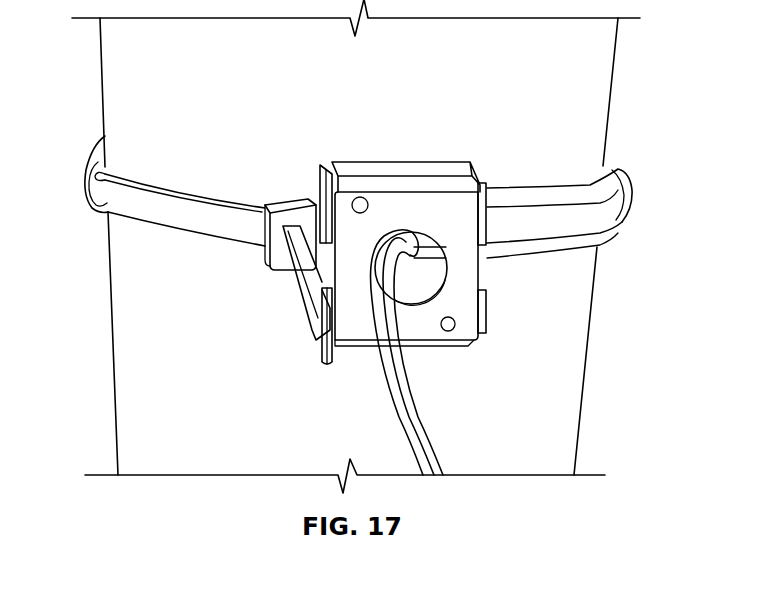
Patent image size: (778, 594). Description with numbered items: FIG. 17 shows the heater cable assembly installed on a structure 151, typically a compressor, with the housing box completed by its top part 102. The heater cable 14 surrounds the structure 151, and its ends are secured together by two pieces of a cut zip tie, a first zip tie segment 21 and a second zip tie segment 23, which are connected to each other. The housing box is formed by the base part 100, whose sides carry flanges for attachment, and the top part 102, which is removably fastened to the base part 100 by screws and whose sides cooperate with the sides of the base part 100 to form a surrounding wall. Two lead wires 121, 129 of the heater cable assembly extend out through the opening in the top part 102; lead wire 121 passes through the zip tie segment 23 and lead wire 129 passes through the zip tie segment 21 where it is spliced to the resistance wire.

The heater cable 14 is at (618, 205).
The first zip tie segment 21 is at (291, 203).
The second zip tie segment 23 is at (178, 196).
The base part 100 is at (437, 235).
The top part 102 is at (473, 283).
The lead wire 121 is at (432, 452).
The lead wire 129 is at (410, 416).
The structure 151 is at (586, 361).